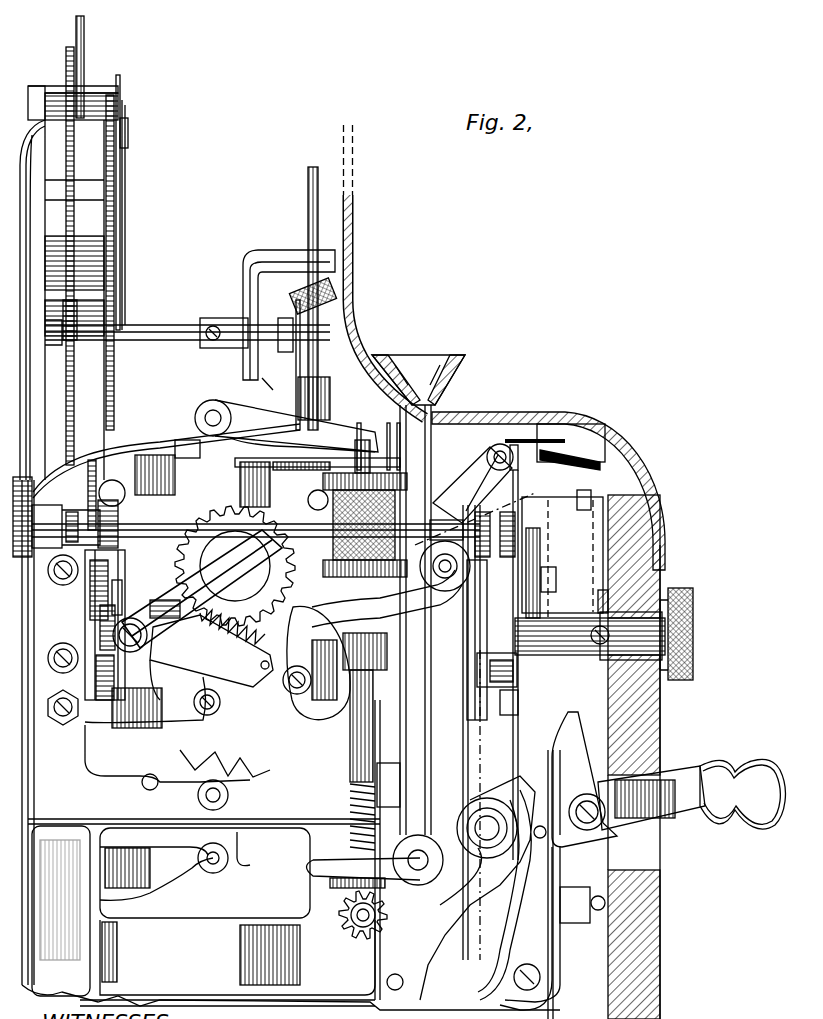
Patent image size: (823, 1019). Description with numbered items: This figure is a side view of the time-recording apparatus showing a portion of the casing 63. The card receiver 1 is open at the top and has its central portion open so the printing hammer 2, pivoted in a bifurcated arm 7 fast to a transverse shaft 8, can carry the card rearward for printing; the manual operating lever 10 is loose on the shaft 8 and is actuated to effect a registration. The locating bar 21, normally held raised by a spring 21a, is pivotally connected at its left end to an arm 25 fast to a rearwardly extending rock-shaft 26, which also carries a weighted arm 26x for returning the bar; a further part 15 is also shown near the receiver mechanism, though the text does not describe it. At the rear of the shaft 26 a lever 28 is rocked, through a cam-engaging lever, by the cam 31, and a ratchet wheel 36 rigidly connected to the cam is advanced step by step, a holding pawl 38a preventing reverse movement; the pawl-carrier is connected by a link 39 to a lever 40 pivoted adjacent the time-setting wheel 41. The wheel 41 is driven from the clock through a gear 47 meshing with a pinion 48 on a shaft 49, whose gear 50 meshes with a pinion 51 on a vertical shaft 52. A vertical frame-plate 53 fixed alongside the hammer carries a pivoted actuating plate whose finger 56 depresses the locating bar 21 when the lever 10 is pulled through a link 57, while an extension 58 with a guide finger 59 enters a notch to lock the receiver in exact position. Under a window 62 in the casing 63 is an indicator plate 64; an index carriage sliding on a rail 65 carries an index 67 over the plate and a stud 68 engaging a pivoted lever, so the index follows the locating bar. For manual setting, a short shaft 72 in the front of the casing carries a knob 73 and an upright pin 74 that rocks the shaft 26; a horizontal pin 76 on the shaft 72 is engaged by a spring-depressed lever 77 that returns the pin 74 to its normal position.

The card receiver 1 is at (462, 366).
The printing hammer 2 is at (505, 510).
The bifurcated arm 7 is at (478, 766).
The transverse shaft 8 is at (487, 828).
The manual operating lever 10 is at (720, 774).
The slide bar 15 is at (527, 552).
The locating bar 21 is at (483, 682).
The spring 21a is at (498, 692).
The arm 25 is at (478, 658).
The rock-shaft 26 is at (158, 522).
The weighted arm 26x is at (90, 505).
The lever 28 is at (93, 470).
The cam 31 is at (85, 594).
The ratchet wheel 36 is at (100, 612).
The holding pawl 38a is at (108, 694).
The link 39 is at (125, 562).
The lever 40 is at (122, 82).
The time-setting wheel 41 is at (116, 172).
The gear 47 is at (78, 172).
The pinion 48 is at (80, 302).
The shaft 49 is at (158, 330).
The gear 50 is at (300, 352).
The pinion 51 is at (330, 388).
The vertical shaft 52 is at (318, 330).
The frame-plate 53 is at (565, 733).
The finger 56 is at (466, 636).
The link 57 is at (580, 795).
The extension 58 is at (563, 498).
The guide finger 59 is at (585, 500).
The window 62 is at (590, 428).
The casing 63 is at (645, 468).
The indicator plate 64 is at (590, 455).
The rail 65 is at (503, 450).
The index 67 is at (555, 440).
The stud 68 is at (520, 462).
The short shaft 72 is at (548, 630).
The manual operating knob 73 is at (695, 616).
The pin 74 is at (548, 570).
The pin 76 is at (597, 628).
The lever 77 is at (615, 590).